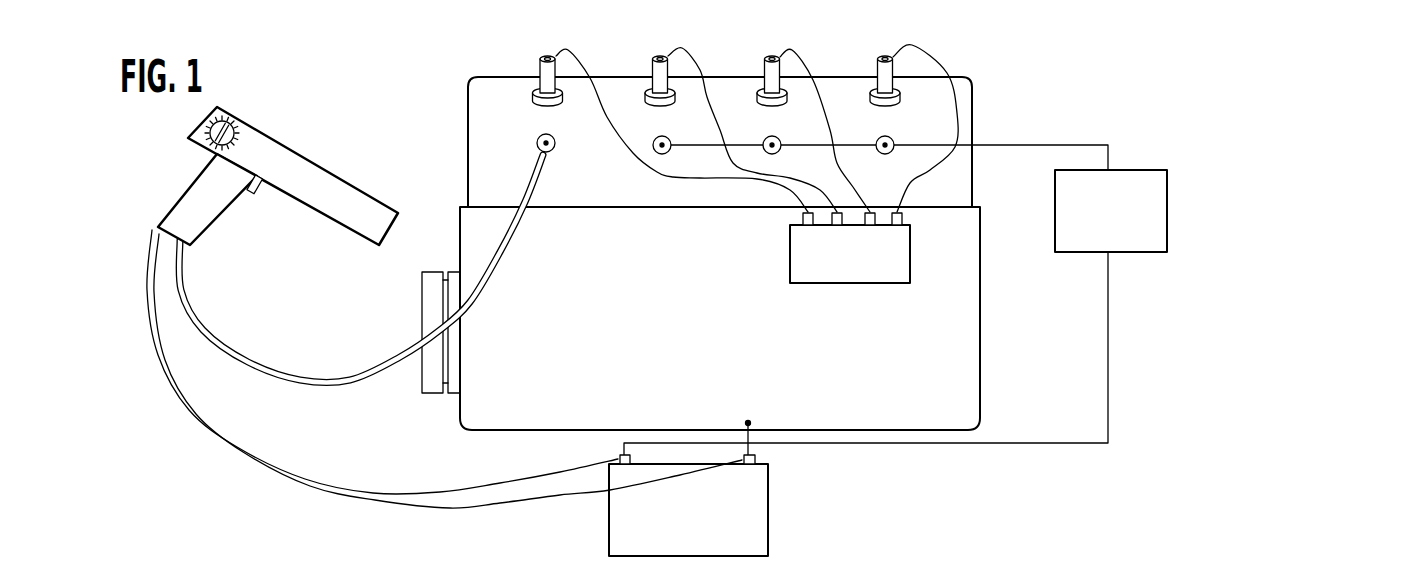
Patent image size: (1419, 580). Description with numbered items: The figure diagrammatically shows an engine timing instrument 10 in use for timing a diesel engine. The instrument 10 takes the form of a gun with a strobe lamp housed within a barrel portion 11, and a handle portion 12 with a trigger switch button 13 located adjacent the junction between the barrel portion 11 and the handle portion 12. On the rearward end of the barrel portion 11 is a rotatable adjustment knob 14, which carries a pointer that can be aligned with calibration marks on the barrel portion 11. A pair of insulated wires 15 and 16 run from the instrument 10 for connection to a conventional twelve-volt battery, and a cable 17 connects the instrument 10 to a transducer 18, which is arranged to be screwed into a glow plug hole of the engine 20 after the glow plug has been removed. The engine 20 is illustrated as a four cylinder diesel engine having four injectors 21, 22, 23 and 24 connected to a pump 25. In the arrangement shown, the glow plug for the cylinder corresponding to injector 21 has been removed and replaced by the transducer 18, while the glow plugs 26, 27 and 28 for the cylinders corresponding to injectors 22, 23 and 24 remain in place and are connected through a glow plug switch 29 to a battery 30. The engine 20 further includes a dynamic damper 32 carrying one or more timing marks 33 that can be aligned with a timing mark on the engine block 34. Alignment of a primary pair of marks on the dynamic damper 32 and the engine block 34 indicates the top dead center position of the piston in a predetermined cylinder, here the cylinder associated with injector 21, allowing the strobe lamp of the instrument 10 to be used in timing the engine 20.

The engine timing instrument 10 is at (238, 178).
The barrel portion 11 is at (327, 183).
The handle portion 12 is at (205, 217).
The trigger switch button 13 is at (258, 185).
The rotatable adjustment knob 14 is at (188, 134).
The insulated wire 15 is at (405, 492).
The insulated wire 16 is at (478, 510).
The cable 17 is at (500, 250).
The transducer 18 is at (556, 146).
The engine 20 is at (466, 110).
The injector 21 is at (538, 60).
The injector 22 is at (655, 61).
The injector 23 is at (766, 60).
The injector 24 is at (878, 60).
The pump 25 is at (860, 272).
The glow plug 26 is at (669, 150).
The glow plug 27 is at (777, 152).
The glow plug 28 is at (886, 154).
The glow plug switch 29 is at (1082, 252).
The battery 30 is at (769, 506).
The dynamic damper 32 is at (428, 305).
The timing mark 33 is at (440, 273).
The engine block 34 is at (470, 222).